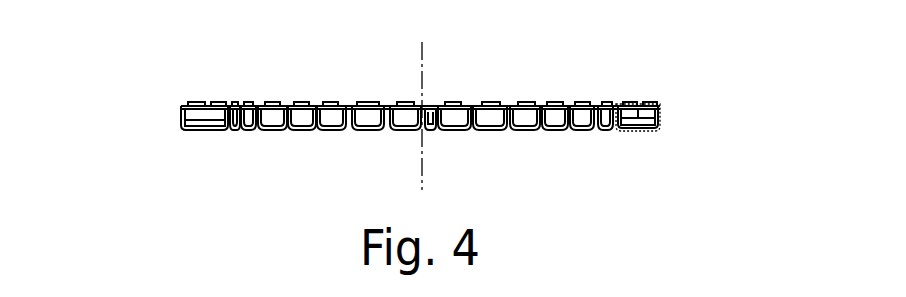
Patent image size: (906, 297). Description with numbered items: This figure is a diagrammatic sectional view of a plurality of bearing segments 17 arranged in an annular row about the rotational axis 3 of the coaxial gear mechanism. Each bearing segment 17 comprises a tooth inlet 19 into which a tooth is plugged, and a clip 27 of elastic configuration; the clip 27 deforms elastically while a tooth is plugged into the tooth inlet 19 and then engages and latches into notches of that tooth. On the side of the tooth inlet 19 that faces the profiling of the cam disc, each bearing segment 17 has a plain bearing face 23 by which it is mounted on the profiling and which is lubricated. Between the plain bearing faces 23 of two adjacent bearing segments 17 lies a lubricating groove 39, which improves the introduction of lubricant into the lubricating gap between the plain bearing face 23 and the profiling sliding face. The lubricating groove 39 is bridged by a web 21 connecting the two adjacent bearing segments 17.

The rotational axis 3 is at (422, 167).
The bearing segment 17 is at (181, 118).
The tooth inlet 19 is at (640, 103).
The web 21 is at (390, 103).
The plain bearing face 23 is at (377, 129).
The clip 27 is at (660, 103).
The lubricating groove 39 is at (433, 129).